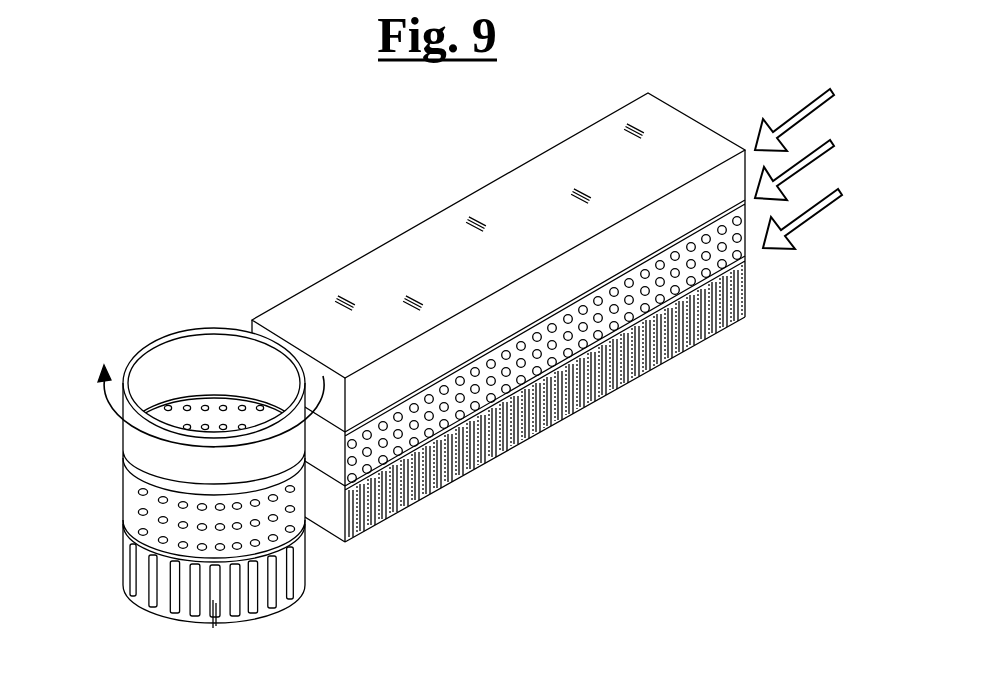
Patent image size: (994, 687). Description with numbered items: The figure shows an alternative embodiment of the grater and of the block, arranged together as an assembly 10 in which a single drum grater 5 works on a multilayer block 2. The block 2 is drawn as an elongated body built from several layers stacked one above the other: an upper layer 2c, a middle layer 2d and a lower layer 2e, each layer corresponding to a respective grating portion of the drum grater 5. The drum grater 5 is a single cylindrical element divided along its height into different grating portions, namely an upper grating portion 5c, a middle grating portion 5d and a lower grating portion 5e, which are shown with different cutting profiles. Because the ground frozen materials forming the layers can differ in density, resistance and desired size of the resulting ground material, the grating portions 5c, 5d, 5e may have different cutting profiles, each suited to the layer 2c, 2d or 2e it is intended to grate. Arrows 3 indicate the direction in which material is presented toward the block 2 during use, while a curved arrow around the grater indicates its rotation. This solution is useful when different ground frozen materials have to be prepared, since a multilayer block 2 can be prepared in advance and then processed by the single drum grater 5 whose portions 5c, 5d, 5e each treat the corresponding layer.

The filter assembly 10 is at (434, 361).
The block 2 is at (532, 313).
The layer of the block 2c is at (617, 123).
The layer of the block 2d is at (703, 260).
The layer of the block 2e is at (570, 400).
The incident flow arrows 3 is at (800, 113).
The drum grater 5 is at (236, 449).
The grating portion 5c is at (125, 433).
The grating portion 5d is at (276, 512).
The grating portion 5e is at (152, 593).